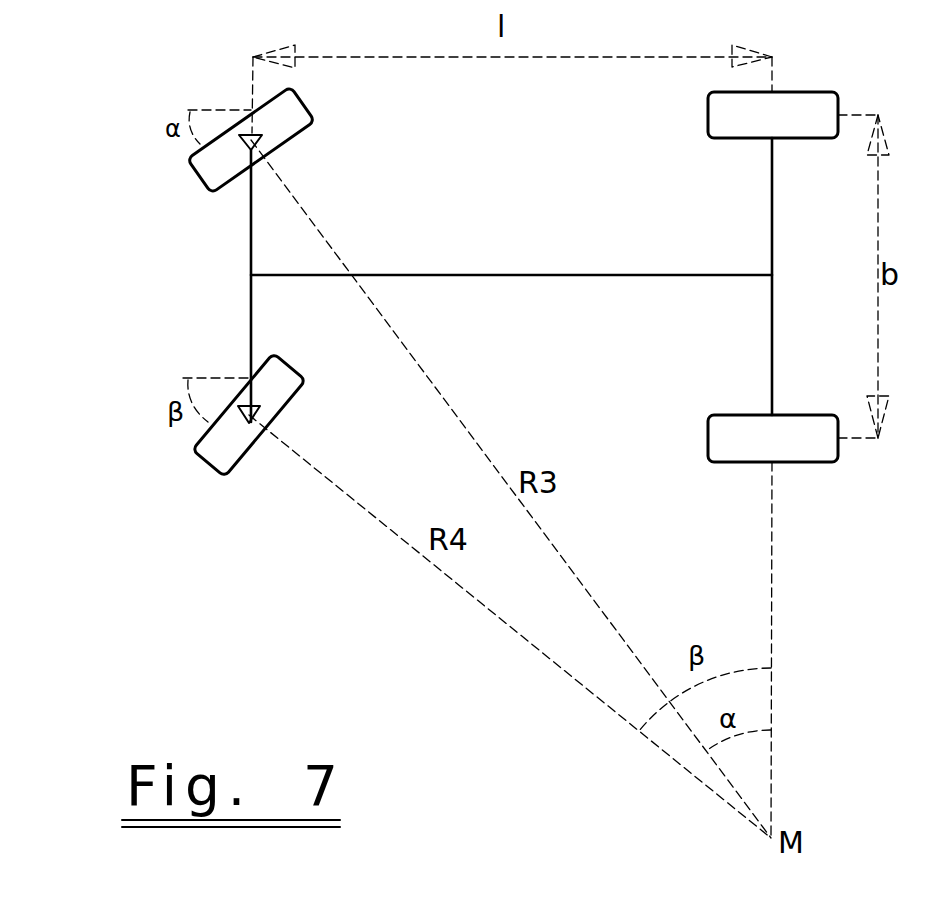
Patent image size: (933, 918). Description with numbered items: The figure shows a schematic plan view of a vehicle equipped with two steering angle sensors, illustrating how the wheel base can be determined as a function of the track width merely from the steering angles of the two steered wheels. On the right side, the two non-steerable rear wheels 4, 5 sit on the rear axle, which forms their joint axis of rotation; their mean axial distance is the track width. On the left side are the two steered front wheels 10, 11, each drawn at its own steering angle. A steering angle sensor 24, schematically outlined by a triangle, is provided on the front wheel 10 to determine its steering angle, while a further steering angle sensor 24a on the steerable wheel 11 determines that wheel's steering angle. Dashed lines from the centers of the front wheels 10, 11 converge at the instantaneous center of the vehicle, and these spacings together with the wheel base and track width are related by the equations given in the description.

The rear wheel 4 is at (804, 118).
The rear wheel 5 is at (803, 447).
The front wheel 10 is at (196, 163).
The steerable wheel 11 is at (228, 458).
The steering angle sensor 24 is at (250, 132).
The steering angle sensor 24a is at (250, 408).